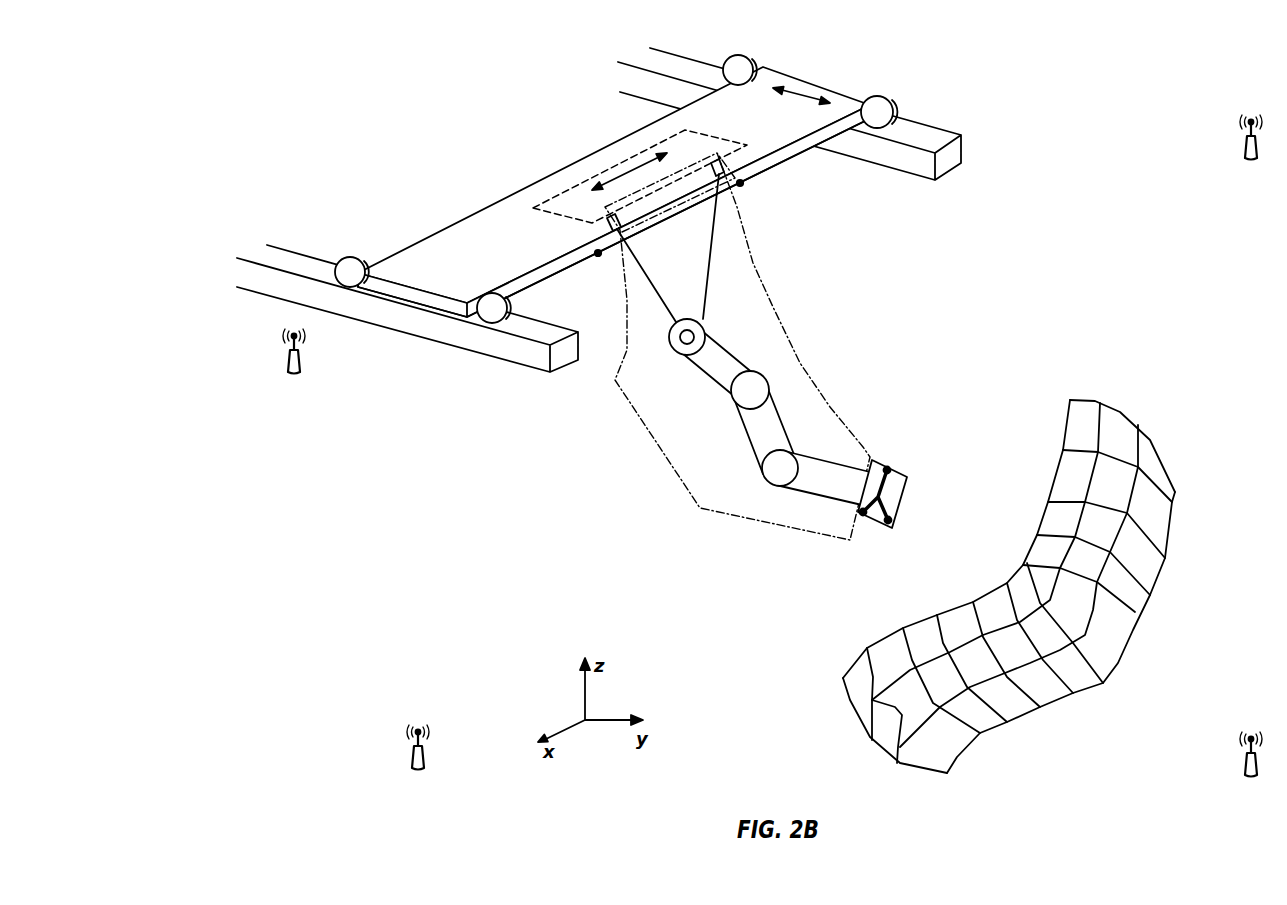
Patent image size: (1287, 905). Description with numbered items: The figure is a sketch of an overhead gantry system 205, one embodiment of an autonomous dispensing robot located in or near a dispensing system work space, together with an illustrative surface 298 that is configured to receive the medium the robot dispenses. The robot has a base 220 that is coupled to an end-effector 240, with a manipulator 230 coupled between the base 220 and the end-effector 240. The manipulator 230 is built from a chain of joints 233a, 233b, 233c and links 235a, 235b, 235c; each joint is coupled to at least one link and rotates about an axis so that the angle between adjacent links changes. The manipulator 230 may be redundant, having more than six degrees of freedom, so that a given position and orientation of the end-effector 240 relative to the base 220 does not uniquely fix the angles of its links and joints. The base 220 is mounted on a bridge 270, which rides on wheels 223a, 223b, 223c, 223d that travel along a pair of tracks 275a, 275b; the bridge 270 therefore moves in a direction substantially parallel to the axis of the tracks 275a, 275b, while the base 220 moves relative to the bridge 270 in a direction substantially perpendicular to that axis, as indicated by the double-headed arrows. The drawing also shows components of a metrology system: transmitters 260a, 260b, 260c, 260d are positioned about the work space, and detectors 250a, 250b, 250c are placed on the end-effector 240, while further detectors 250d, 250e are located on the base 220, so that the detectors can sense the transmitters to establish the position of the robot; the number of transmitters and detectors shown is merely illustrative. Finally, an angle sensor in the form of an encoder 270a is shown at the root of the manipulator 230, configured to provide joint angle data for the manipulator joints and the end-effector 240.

The gantry system 205 is at (480, 522).
The base 220 is at (563, 205).
The wheel 223a is at (740, 72).
The wheel 223b is at (880, 115).
The wheel 223c is at (488, 303).
The wheel 223d is at (353, 267).
The manipulator 230 is at (752, 307).
The joint 233a is at (672, 350).
The joint 233b is at (733, 398).
The joint 233c is at (763, 480).
The link 235a is at (737, 340).
The link 235b is at (797, 417).
The link 235c is at (835, 500).
The end-effector 240 is at (910, 477).
The detector 250a is at (890, 471).
The detector 250b is at (866, 514).
The detector 250c is at (892, 519).
The detector 250d is at (742, 183).
The sensor/marker 250e is at (597, 253).
The transmitter 260a is at (303, 360).
The transmitter 260b is at (1245, 148).
The transmitter 260c is at (1245, 766).
The transmitter 260d is at (425, 758).
The bridge 270 is at (792, 82).
The encoder 270a is at (684, 335).
The track 275a is at (953, 155).
The track 275b is at (518, 355).
The surface 298 is at (1196, 545).